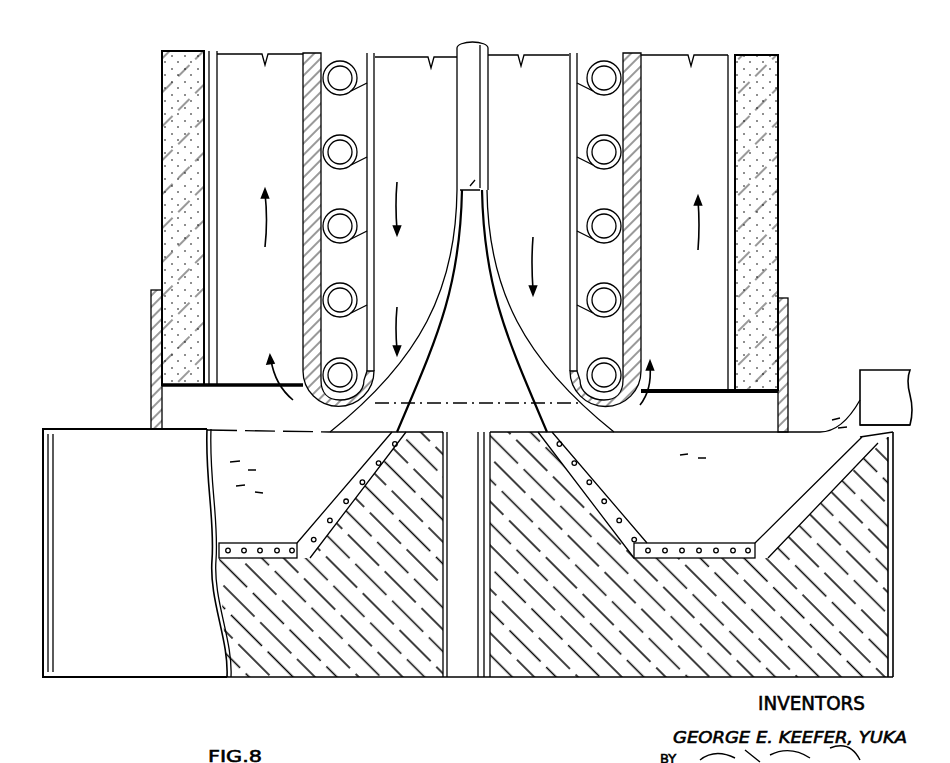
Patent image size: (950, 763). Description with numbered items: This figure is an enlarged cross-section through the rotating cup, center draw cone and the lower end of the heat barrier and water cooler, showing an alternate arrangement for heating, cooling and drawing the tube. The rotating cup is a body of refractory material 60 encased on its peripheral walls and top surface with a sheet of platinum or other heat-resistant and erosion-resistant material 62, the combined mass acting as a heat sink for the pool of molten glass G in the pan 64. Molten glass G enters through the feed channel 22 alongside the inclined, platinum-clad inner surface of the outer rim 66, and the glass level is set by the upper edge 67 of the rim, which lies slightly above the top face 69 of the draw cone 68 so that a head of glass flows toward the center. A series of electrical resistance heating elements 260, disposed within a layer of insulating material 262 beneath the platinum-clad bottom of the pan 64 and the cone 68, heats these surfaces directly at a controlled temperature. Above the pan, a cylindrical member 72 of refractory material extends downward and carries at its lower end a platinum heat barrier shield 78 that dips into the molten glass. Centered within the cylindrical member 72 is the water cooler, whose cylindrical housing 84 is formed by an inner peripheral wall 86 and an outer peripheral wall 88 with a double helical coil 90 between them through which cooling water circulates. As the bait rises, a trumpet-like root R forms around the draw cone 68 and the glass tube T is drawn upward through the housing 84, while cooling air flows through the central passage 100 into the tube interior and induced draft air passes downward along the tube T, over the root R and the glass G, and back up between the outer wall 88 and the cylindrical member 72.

The glass tube T is at (481, 107).
The root of the tube R is at (330, 430).
The molten glass G is at (705, 500).
The feed channel 22 is at (880, 378).
The refractory material 60 is at (853, 556).
The heat-resistant and erosion-resistant material 62 is at (598, 495).
The pan 64 is at (692, 560).
The outer rim 66 is at (852, 442).
The upper edge 67 is at (872, 436).
The draw cone 68 is at (357, 471).
The top face 69 is at (497, 428).
The cylindrical member 72 is at (780, 176).
The heat barrier shield 78 is at (789, 405).
The cylindrical housing 84 is at (537, 191).
The inner peripheral wall 86 is at (615, 130).
The outer peripheral wall 88 is at (632, 178).
The double helical coil 90 is at (326, 140).
The central passage 100 is at (461, 678).
The electrical resistance heating elements 260 is at (240, 560).
The insulating material 262 is at (284, 560).